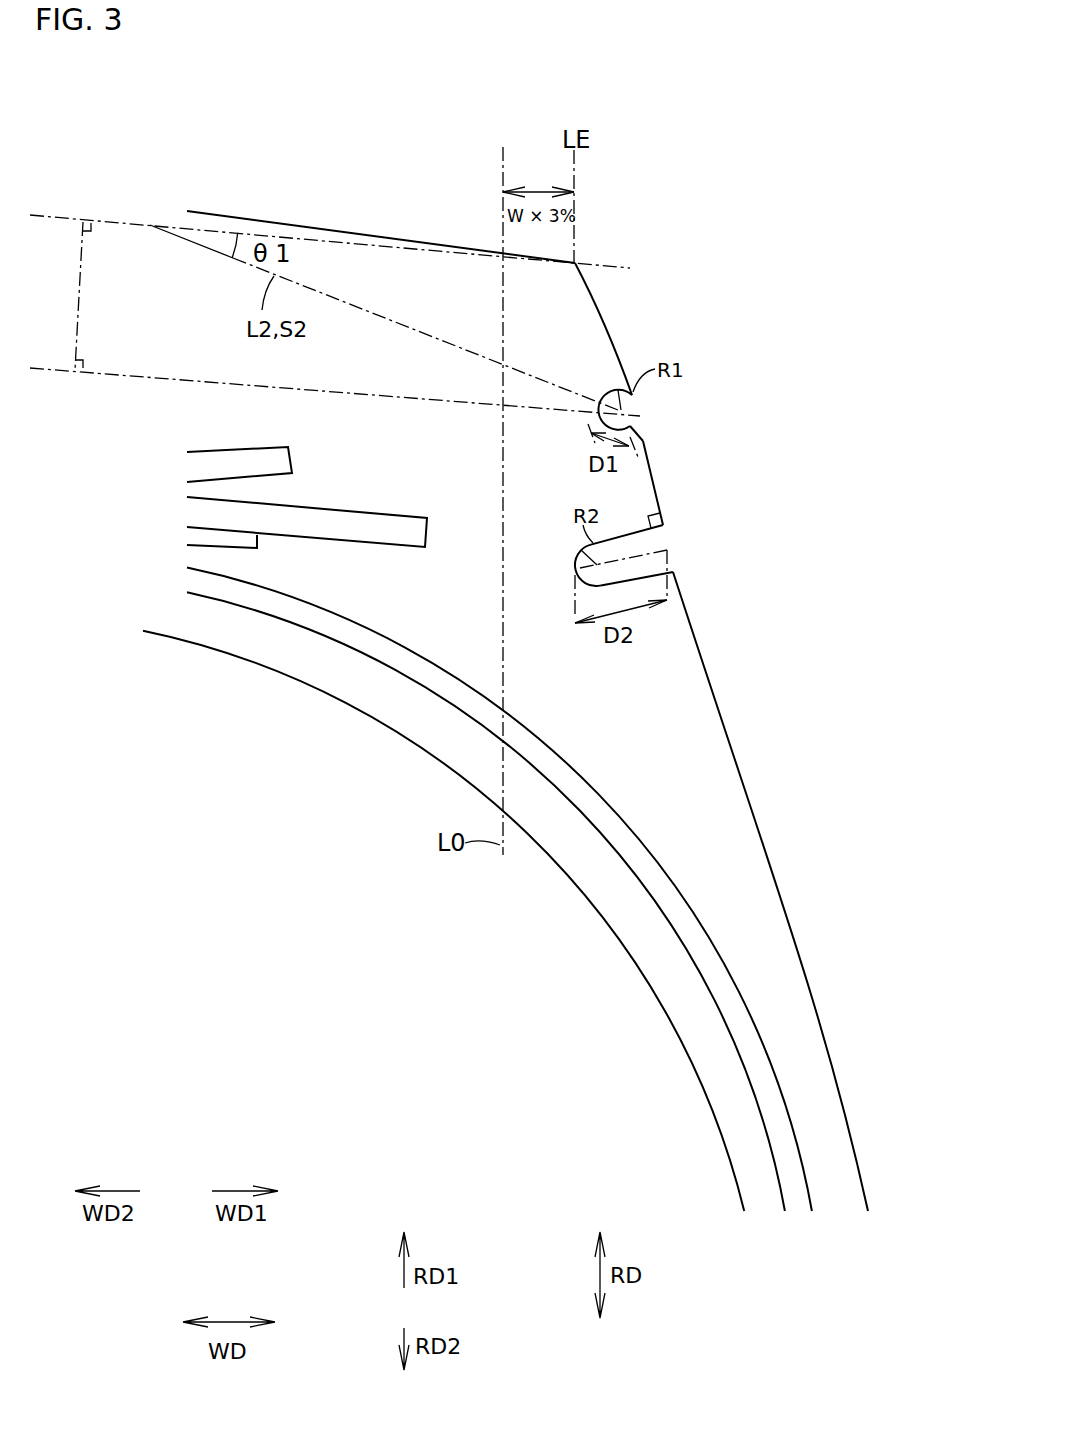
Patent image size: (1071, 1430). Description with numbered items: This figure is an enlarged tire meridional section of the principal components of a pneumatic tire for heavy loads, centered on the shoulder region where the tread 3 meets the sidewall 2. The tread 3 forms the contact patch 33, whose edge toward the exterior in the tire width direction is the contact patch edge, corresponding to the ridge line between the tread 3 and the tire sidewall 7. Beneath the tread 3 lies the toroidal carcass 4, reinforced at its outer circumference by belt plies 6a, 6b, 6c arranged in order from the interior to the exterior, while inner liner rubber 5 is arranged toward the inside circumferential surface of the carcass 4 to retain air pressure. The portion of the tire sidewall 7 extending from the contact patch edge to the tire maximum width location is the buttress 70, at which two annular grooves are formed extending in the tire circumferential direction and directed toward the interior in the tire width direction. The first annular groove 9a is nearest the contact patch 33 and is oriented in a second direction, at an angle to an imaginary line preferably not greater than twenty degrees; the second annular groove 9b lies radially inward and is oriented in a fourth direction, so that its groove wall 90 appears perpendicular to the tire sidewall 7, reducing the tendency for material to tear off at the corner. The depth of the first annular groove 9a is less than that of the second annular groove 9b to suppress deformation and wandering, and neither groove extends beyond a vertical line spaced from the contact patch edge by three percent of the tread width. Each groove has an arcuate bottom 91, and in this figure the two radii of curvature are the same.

The sidewall 2 is at (887, 967).
The tread 3 is at (213, 160).
The carcass 4 is at (650, 861).
The inner liner rubber 5 is at (693, 1067).
The belt ply 6a is at (250, 546).
The belt ply 6b is at (341, 523).
The belt ply 6c is at (272, 455).
The tire sidewall 7 is at (742, 784).
The first annular groove 9a is at (659, 403).
The second annular groove 9b is at (691, 529).
The contact patch 33 is at (288, 222).
The buttress 70 is at (885, 429).
The groove wall 90 is at (627, 523).
The bottom 91 is at (607, 392).